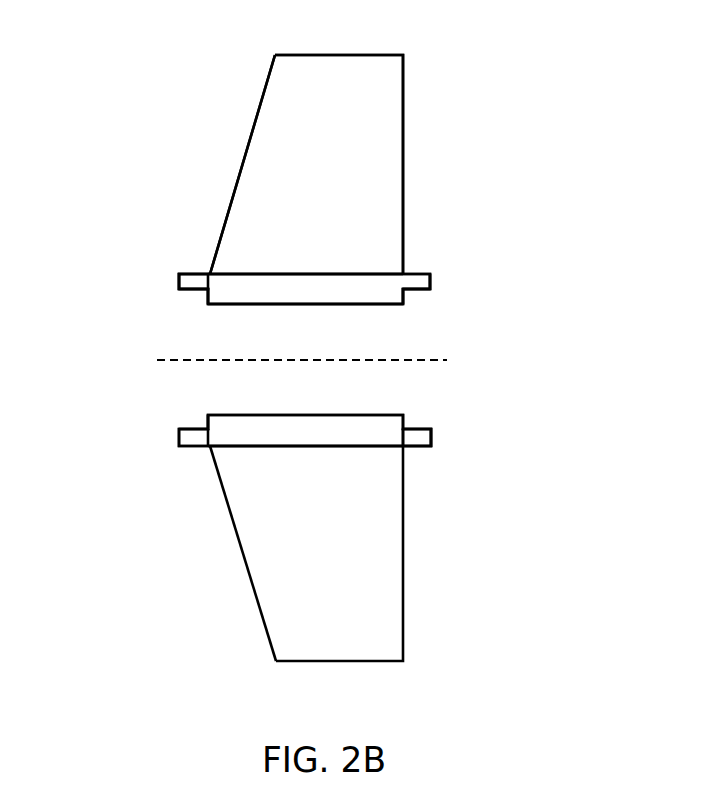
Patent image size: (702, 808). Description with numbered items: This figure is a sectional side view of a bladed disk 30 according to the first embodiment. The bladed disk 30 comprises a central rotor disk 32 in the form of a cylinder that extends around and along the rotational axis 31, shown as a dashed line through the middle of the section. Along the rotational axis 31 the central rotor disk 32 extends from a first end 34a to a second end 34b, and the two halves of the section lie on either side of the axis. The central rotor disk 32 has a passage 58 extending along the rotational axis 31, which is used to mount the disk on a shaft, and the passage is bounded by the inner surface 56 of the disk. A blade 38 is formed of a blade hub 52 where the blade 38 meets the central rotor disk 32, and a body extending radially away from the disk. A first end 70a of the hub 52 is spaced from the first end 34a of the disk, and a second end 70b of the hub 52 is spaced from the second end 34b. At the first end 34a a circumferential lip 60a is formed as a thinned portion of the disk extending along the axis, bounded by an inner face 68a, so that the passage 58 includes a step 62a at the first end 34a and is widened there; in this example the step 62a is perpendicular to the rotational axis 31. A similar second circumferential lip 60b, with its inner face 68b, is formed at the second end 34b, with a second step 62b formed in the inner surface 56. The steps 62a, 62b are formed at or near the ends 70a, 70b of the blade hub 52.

The bladed disk 30 is at (166, 86).
The rotational axis 31 is at (448, 360).
The central rotor disk 32 is at (235, 285).
The first end 34a is at (92, 383).
The second end 34b is at (503, 333).
The blade 38 is at (368, 75).
The blade hub 52 is at (375, 273).
The inner surface 56 is at (279, 302).
The passage 58 is at (331, 344).
The first circumferential lip 60a is at (185, 282).
The second circumferential lip 60b is at (420, 437).
The first step 62a is at (205, 418).
The second step 62b is at (416, 290).
The inner face 68a is at (205, 300).
The inner face 68b is at (405, 297).
The first end of the hub 70a is at (208, 448).
The second end of the hub 70b is at (405, 450).